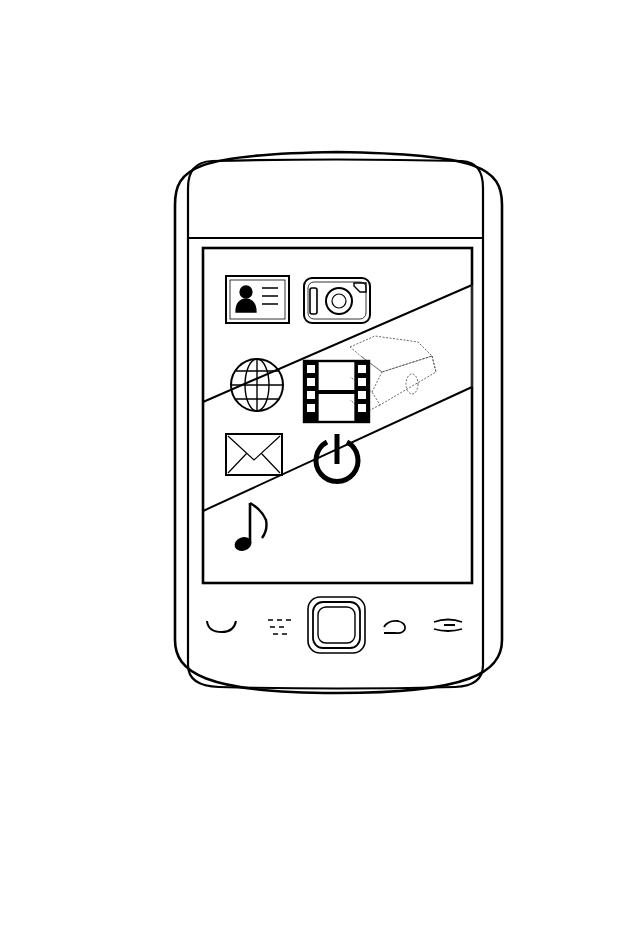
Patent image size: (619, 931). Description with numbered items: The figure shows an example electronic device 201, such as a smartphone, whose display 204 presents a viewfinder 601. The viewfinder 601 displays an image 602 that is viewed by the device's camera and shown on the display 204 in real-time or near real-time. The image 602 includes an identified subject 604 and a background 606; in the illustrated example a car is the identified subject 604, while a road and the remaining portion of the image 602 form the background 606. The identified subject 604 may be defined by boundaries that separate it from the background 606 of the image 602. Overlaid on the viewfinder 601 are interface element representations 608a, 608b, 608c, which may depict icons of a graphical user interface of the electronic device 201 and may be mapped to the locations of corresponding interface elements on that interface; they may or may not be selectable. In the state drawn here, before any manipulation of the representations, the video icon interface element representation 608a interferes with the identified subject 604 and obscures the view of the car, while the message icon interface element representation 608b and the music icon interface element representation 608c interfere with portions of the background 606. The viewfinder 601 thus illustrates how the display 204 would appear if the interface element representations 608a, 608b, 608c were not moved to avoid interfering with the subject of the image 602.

The electronic device 201 is at (243, 136).
The display 204 is at (202, 352).
The viewfinder 601 is at (473, 526).
The image 602 is at (473, 328).
The identified subject 604 is at (440, 362).
The background 606 is at (457, 567).
The video icon interface element representation 608a is at (367, 410).
The message icon interface element representation 608b is at (226, 475).
The music icon interface element representation 608c is at (237, 548).